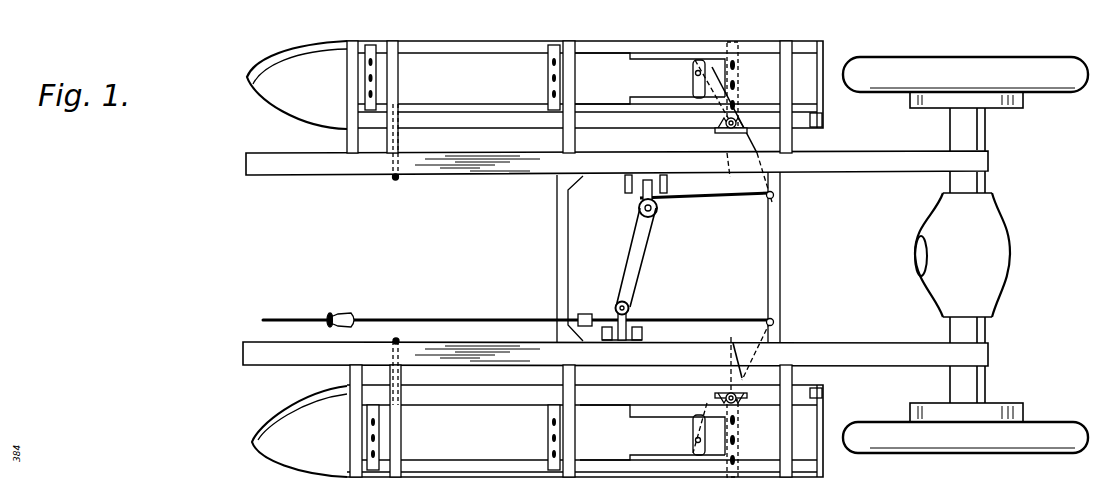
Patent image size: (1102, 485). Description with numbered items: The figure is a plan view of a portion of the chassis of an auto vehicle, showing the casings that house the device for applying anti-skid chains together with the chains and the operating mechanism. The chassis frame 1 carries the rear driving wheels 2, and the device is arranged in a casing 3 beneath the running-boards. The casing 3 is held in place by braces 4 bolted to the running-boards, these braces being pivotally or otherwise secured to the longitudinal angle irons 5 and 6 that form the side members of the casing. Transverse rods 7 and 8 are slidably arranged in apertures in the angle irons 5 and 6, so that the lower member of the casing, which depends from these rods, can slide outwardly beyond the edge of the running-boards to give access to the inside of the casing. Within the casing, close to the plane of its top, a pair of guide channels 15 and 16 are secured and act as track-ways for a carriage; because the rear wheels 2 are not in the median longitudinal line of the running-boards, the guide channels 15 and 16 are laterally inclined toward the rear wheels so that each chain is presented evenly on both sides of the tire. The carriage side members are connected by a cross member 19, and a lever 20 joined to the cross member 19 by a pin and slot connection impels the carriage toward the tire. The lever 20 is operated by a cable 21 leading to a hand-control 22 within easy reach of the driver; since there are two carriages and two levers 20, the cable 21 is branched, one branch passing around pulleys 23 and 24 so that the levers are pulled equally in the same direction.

The chassis frame 1 is at (838, 168).
The rear driving wheels 2 is at (962, 63).
The casing 3 is at (298, 48).
The braces 4 is at (365, 44).
The longitudinal angle iron 5 is at (447, 53).
The longitudinal angle iron 6 is at (455, 92).
The transverse rod 7 is at (400, 143).
The transverse rod 8 is at (725, 144).
The guide channel 15 is at (648, 98).
The guide channel 16 is at (651, 54).
The cross member 19 is at (695, 85).
The lever 20 is at (757, 146).
The cable 21 is at (690, 320).
The hand-control 22 is at (344, 313).
The pulley 23 is at (658, 215).
The pulley 24 is at (620, 300).